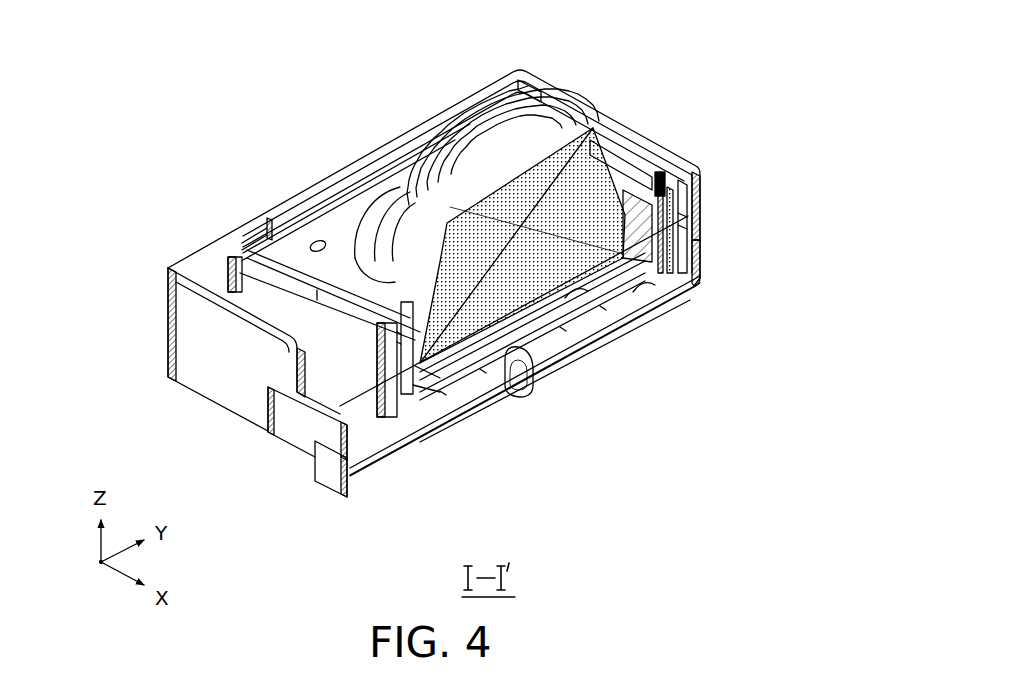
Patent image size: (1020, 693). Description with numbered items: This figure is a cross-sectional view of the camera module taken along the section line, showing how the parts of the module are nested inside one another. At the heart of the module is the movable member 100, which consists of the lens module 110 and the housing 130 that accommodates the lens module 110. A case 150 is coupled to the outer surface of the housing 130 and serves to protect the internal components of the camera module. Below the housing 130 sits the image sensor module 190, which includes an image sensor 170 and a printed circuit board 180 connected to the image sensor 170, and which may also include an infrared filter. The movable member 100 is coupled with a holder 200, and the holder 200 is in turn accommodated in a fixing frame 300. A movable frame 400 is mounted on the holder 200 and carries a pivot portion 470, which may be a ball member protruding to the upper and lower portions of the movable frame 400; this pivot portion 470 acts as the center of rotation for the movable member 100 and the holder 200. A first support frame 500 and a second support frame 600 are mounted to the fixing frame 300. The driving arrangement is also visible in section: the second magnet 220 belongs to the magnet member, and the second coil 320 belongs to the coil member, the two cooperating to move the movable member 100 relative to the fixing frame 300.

The movable member 100 is at (603, 57).
The lens module 110 is at (610, 120).
The housing 130 is at (681, 160).
The case 150 is at (657, 157).
The image sensor 170 is at (582, 295).
The printed circuit board 180 is at (642, 292).
The image sensor module 190 is at (617, 379).
The holder 200 is at (228, 282).
The second magnet 220 is at (700, 250).
The fixing frame 300 is at (180, 329).
The second coil 320 is at (703, 195).
The movable frame 400 is at (468, 415).
The pivot portion 470 is at (533, 376).
The first support frame 500 is at (328, 475).
The second support frame 600 is at (283, 438).